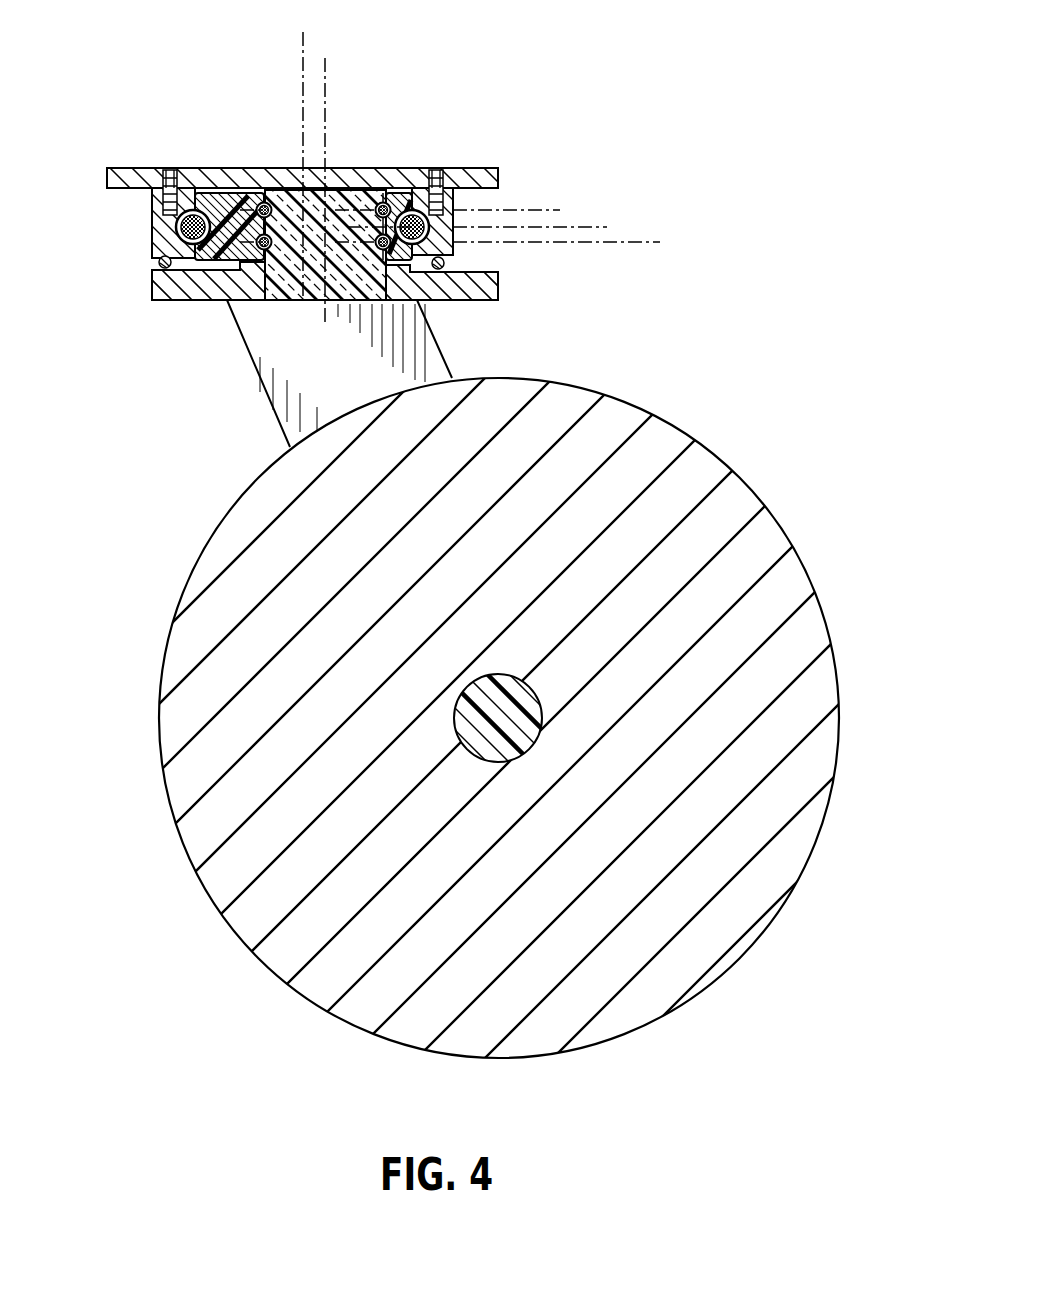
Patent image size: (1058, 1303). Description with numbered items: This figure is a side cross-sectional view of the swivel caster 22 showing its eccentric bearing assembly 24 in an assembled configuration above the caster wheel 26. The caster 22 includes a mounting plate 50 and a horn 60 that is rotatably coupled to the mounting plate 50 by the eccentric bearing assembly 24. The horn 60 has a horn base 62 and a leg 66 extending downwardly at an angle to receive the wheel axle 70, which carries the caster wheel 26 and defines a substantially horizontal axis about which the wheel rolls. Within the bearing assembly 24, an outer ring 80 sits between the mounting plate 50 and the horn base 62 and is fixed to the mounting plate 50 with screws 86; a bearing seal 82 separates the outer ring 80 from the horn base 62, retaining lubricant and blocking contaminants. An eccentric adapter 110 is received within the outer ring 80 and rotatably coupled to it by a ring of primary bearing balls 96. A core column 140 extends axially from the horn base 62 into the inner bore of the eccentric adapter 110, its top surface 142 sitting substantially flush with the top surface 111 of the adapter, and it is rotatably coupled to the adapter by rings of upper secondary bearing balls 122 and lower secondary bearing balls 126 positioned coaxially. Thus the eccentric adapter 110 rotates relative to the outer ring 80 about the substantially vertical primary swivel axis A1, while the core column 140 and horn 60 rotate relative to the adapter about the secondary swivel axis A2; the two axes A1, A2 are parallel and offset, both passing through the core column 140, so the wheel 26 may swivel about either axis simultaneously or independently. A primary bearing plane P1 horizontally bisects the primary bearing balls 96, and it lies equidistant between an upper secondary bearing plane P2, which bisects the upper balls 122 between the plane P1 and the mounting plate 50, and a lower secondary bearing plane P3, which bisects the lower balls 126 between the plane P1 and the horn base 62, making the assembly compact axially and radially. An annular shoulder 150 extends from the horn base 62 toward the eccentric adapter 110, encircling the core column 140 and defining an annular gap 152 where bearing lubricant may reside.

The swivel caster 22 is at (556, 107).
The eccentric bearing assembly 24 is at (142, 252).
The caster wheel 26 is at (817, 622).
The mounting plate 50 is at (471, 172).
The horn 60 is at (256, 375).
The horn base 62 is at (485, 289).
The leg 66 is at (290, 427).
The wheel axle 70 is at (520, 697).
The outer ring 80 is at (152, 203).
The bearing seal 82 is at (160, 263).
The screw 86 is at (170, 168).
The primary bearing balls 96 is at (197, 188).
The eccentric adapter 110 is at (251, 187).
The top surface of the eccentric adapter 111 is at (405, 188).
The upper secondary bearing balls 122 is at (266, 187).
The lower secondary bearing balls 126 is at (253, 300).
The core column 140 is at (373, 189).
The top surface of the core column 142 is at (345, 188).
The annular shoulder 150 is at (415, 251).
The annular gap 152 is at (192, 290).
The primary swivel axis A1 is at (303, 43).
The secondary swivel axis A2 is at (325, 67).
The primary bearing plane P1 is at (603, 226).
The upper secondary bearing plane P2 is at (545, 210).
The lower secondary bearing plane P3 is at (645, 241).